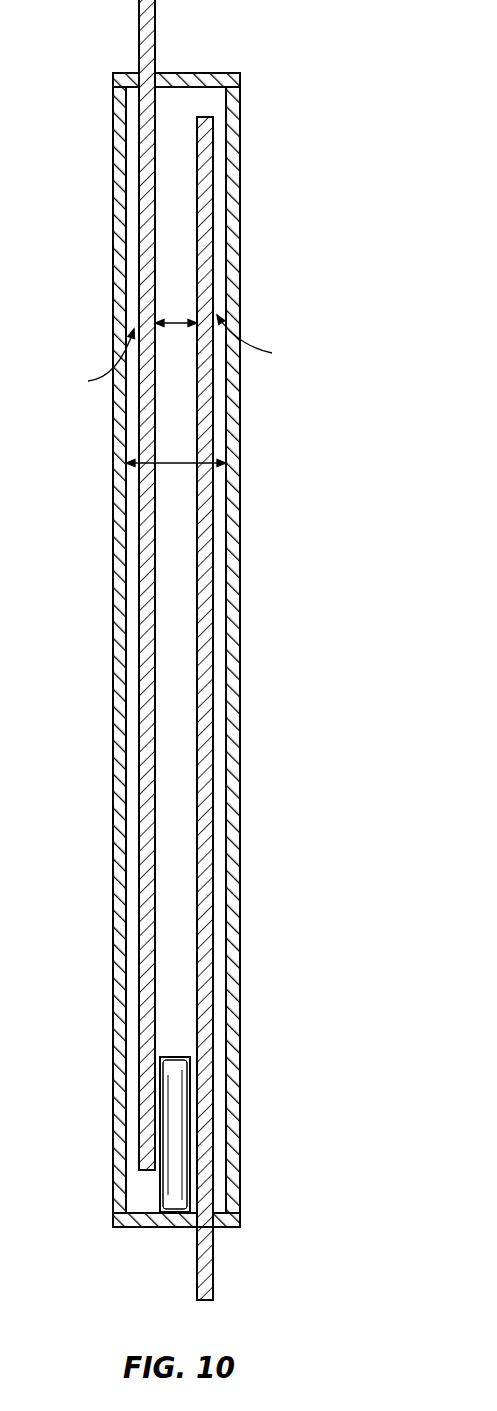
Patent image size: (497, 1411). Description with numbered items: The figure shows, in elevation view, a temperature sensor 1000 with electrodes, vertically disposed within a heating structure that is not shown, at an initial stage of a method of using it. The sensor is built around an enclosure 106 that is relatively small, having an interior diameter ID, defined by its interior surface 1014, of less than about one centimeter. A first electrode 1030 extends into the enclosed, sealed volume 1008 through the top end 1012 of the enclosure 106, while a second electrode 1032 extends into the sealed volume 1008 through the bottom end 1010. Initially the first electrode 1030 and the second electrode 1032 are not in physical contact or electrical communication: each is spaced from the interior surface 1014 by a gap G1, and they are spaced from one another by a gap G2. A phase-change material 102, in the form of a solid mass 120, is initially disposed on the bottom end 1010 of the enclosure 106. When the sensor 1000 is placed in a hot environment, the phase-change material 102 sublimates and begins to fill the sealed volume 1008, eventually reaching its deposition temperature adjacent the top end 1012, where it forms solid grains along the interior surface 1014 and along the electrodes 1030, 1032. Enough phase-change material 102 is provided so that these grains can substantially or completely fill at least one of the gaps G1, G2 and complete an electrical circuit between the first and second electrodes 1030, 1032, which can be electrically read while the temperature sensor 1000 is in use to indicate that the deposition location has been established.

The temperature sensor 1000 is at (245, 650).
The enclosure 106 is at (240, 190).
The top end 1012 is at (252, 82).
The bottom end 1010 is at (260, 1215).
The interior surface 1014 is at (238, 526).
The first electrode 1030 is at (150, 25).
The sealed volume 1008 is at (174, 682).
The second electrode 1032 is at (213, 1267).
The phase-change material 102 is at (178, 1067).
The solid mass 120 is at (175, 1134).
The gap G1 is at (180, 354).
The gap G2 is at (176, 308).
The interior diameter ID is at (176, 451).